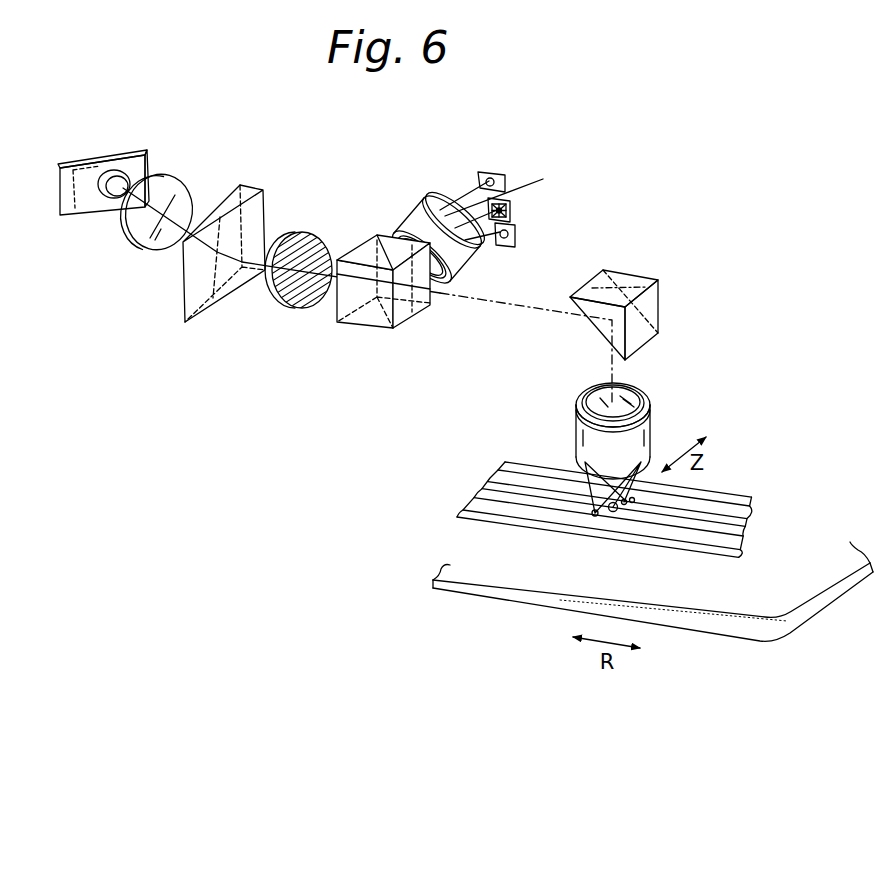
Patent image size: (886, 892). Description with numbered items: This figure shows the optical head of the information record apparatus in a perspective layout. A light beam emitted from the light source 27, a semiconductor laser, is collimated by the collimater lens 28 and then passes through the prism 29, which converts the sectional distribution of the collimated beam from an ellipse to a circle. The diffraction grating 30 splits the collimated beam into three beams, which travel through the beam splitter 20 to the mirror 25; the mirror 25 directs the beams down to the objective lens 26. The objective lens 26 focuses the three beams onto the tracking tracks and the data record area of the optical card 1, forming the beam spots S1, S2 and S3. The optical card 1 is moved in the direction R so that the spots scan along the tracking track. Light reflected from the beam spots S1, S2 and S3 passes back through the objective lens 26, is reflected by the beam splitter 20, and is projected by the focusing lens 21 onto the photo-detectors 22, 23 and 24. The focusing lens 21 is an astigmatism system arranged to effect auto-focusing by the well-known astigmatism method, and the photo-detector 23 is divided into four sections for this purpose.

The optical card 1 is at (510, 597).
The beam splitter 20 is at (362, 325).
The focusing lens 21 is at (422, 199).
The photo-detector 22 is at (506, 176).
The photo-detector 23 is at (512, 204).
The photo-detector 24 is at (515, 239).
The mirror 25 is at (636, 276).
The objective lens 26 is at (652, 412).
The light source 27 is at (136, 151).
The collimater lens 28 is at (182, 180).
The prism 29 is at (262, 190).
The diffraction grating 30 is at (307, 233).
The beam spot S1 is at (595, 514).
The beam spot S2 is at (613, 512).
The beam spot S3 is at (632, 503).